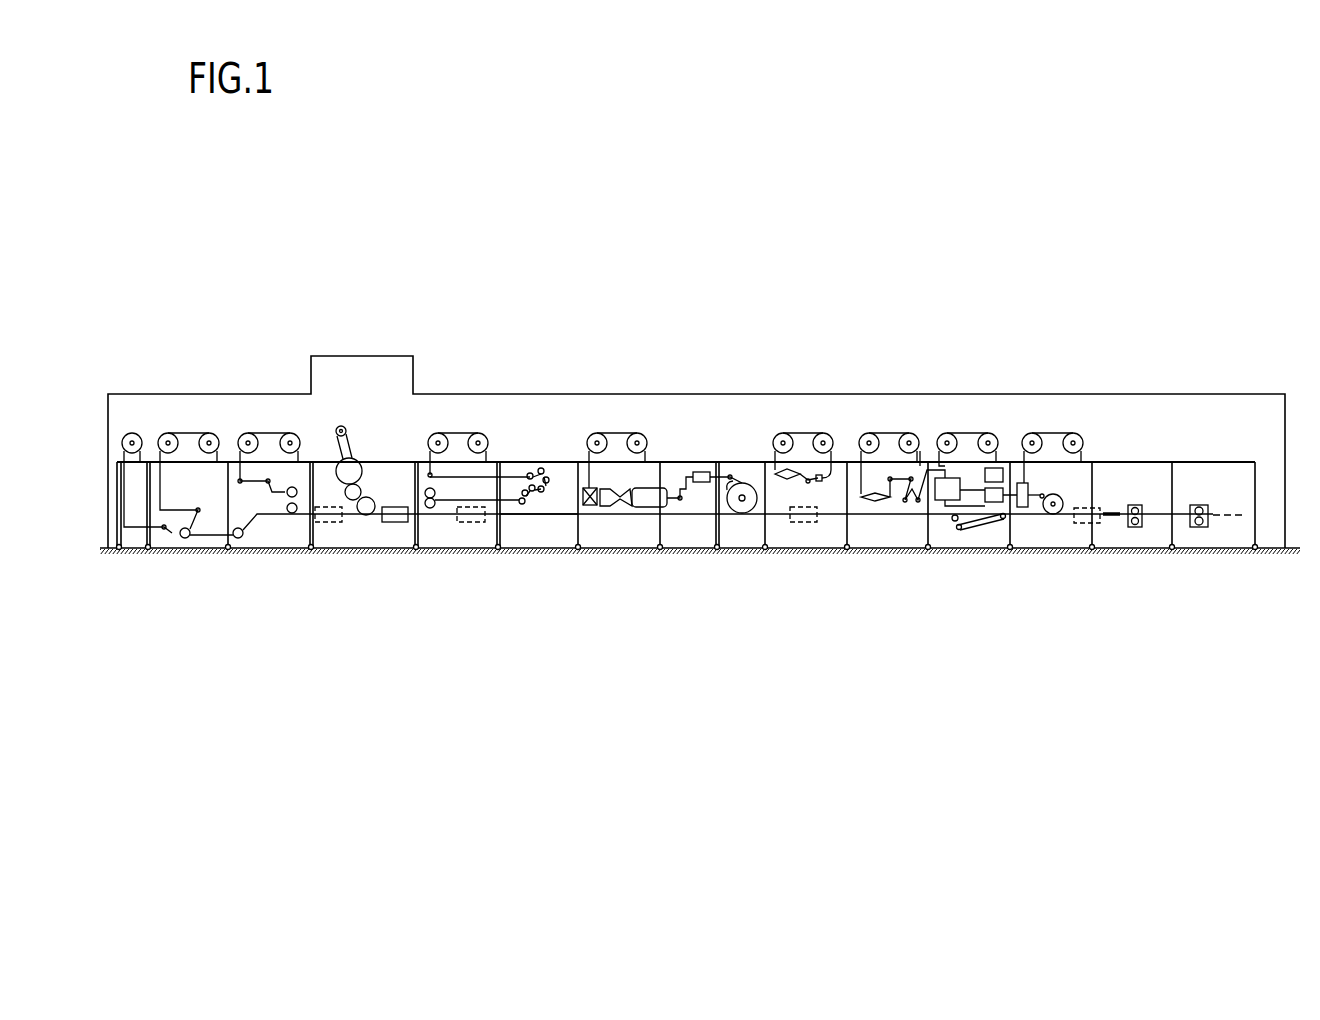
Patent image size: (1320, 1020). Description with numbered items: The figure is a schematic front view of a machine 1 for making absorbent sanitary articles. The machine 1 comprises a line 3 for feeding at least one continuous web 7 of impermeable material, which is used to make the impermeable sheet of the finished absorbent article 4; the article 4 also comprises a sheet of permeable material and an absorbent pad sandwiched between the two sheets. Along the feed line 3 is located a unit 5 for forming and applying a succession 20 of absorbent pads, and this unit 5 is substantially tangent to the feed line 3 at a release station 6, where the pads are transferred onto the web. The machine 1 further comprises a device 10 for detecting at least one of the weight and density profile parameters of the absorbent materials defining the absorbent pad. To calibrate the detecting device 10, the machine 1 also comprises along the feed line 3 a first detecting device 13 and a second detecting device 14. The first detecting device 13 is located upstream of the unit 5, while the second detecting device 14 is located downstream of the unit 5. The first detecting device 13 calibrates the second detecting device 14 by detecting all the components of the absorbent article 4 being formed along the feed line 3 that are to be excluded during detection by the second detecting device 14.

The machine for making absorbent sanitary articles 1 is at (703, 288).
The feed line 3 is at (553, 522).
The absorbent article 4 is at (1214, 523).
The unit for forming and applying absorbent pads 5 is at (363, 423).
The release station 6 is at (370, 521).
The continuous web of impermeable material 7 is at (517, 513).
The detecting device 10 is at (400, 522).
The first detecting device 13 is at (315, 507).
The second detecting device 14 is at (473, 523).
The succession of absorbent pads 20 is at (357, 520).